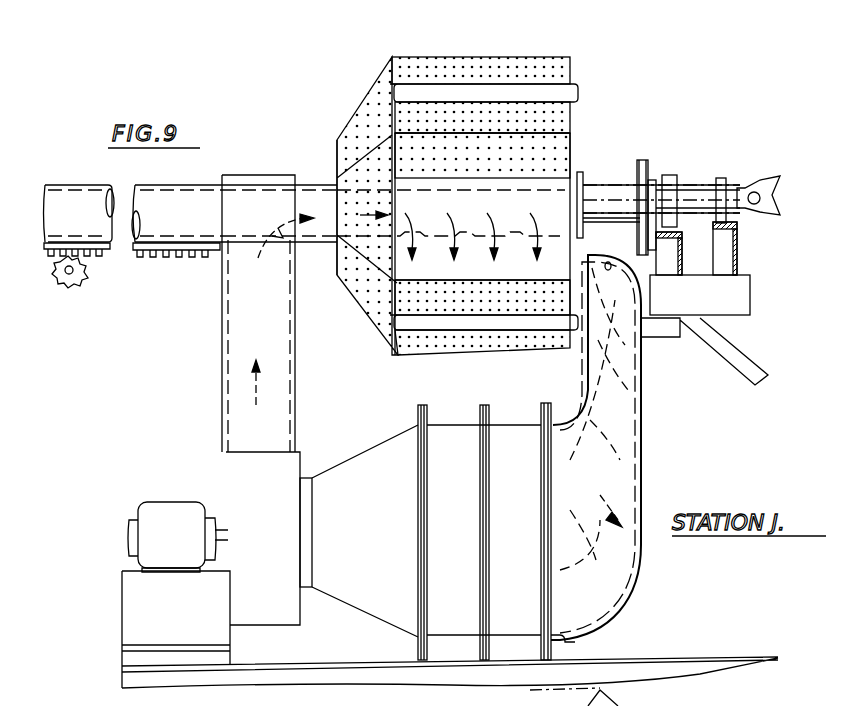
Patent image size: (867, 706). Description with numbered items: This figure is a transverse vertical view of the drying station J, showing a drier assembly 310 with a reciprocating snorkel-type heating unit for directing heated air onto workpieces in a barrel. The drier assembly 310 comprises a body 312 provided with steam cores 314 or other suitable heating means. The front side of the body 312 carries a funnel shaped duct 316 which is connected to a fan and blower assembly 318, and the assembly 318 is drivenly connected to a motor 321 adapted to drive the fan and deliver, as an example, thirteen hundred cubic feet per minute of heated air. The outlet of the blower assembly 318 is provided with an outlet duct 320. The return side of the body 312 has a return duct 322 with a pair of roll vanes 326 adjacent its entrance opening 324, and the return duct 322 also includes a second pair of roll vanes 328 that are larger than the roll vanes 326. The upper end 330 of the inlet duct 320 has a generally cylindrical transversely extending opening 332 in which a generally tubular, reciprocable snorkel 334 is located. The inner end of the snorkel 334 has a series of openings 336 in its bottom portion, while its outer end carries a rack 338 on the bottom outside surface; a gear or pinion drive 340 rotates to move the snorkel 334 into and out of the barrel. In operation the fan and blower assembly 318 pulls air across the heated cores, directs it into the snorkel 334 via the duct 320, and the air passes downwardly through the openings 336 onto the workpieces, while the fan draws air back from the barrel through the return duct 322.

The drier assembly 310 is at (208, 400).
The body 312 is at (457, 425).
The steam core 314 is at (496, 425).
The funnel shaped duct 316 is at (378, 458).
The fan and blower assembly 318 is at (247, 468).
The outlet duct 320 is at (222, 340).
The motor 321 is at (160, 535).
The return duct 322 is at (641, 573).
The entrance opening 324 is at (611, 262).
The roll vanes 326 is at (647, 363).
The roll vanes 328 is at (618, 467).
The upper end 330 is at (277, 168).
The opening 332 is at (300, 265).
The snorkel 334 is at (150, 198).
The openings 336 is at (460, 240).
The rack 338 is at (138, 253).
The gear or pinion drive 340 is at (73, 283).